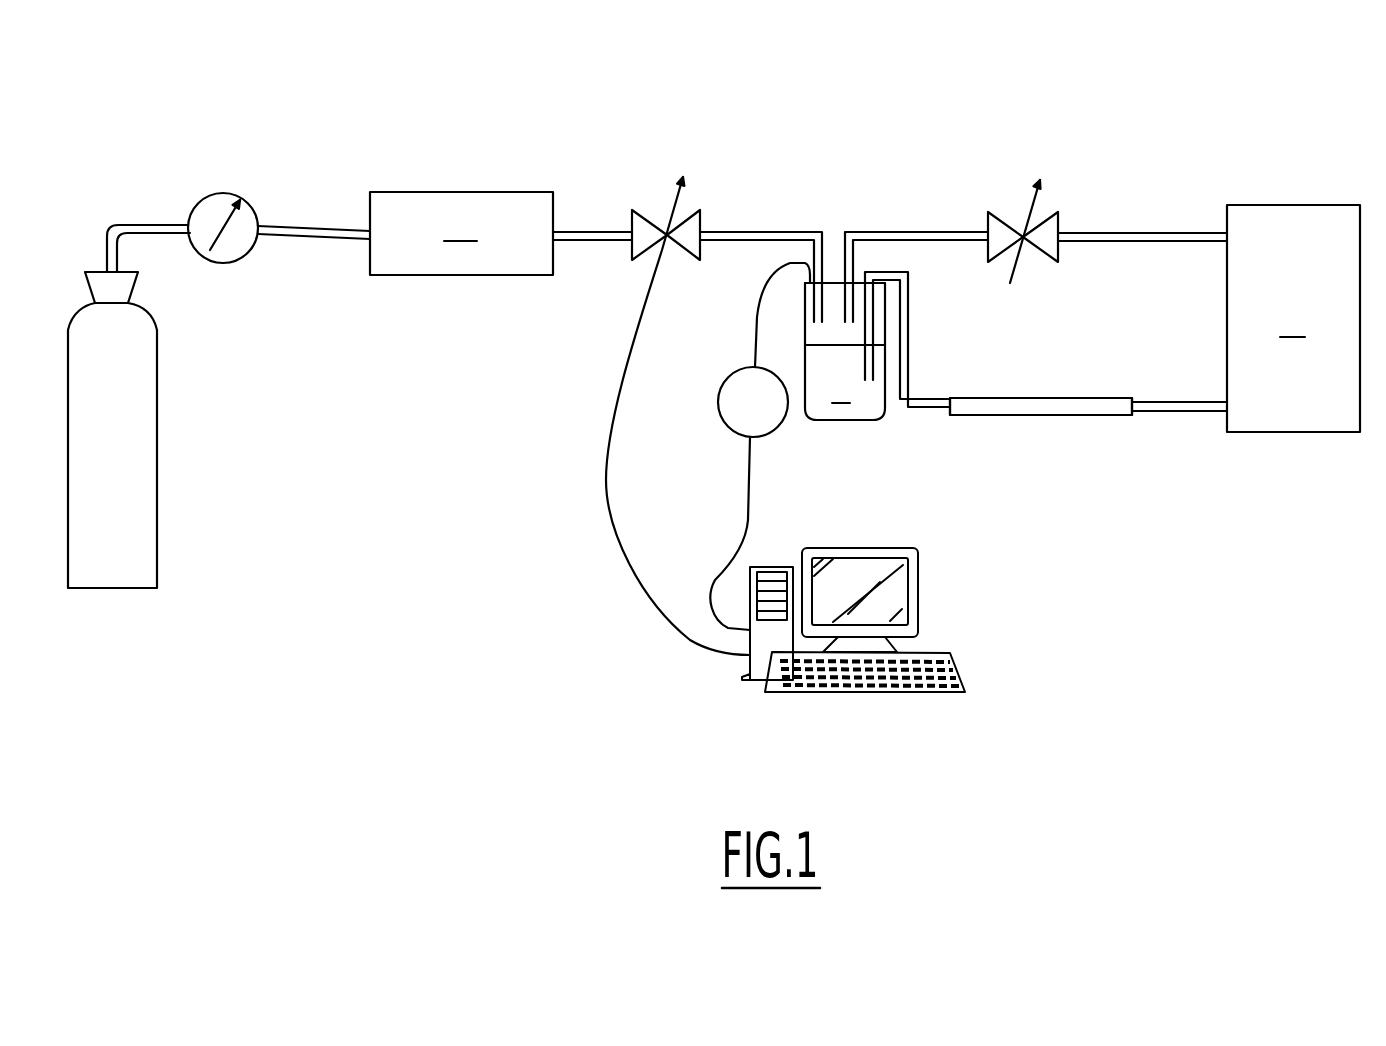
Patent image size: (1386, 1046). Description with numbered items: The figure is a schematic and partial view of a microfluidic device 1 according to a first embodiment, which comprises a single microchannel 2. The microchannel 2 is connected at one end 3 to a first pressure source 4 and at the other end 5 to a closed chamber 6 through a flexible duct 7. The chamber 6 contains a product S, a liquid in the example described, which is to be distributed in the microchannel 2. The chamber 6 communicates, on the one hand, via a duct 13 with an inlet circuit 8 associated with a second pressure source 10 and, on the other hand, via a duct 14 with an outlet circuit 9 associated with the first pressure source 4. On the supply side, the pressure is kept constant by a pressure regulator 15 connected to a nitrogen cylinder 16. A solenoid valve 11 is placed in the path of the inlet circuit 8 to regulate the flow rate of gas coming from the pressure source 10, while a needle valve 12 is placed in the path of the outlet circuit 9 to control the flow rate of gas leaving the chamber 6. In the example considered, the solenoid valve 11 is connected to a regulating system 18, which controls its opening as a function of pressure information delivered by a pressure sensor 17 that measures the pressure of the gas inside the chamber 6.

The microfluidic device 1 is at (488, 600).
The microchannel 2 is at (1053, 417).
The end 3 is at (1138, 415).
The first pressure source 4 is at (1209, 318).
The other end 5 is at (950, 413).
The closed chamber 6 is at (837, 422).
The flexible duct 7 is at (910, 362).
The inlet circuit 8 is at (600, 170).
The outlet circuit 9 is at (942, 163).
The second pressure source 10 is at (501, 233).
The solenoid valve 11 is at (690, 213).
The needle valve 12 is at (1007, 233).
The duct 13 is at (776, 232).
The duct 14 is at (895, 232).
The pressure regulator 15 is at (238, 267).
The nitrogen cylinder 16 is at (157, 432).
The pressure sensor 17 is at (723, 423).
The regulating system 18 is at (917, 593).